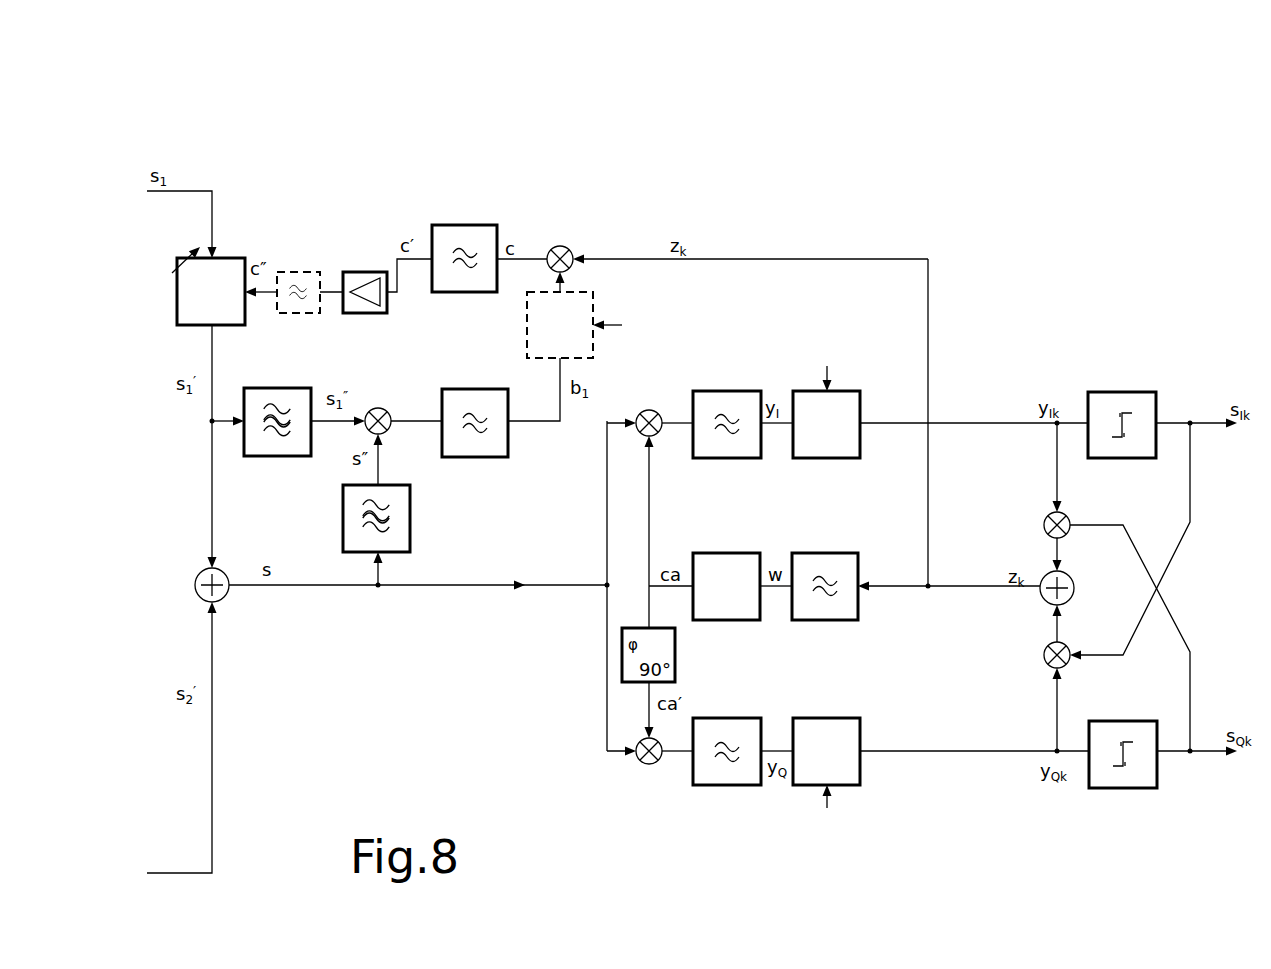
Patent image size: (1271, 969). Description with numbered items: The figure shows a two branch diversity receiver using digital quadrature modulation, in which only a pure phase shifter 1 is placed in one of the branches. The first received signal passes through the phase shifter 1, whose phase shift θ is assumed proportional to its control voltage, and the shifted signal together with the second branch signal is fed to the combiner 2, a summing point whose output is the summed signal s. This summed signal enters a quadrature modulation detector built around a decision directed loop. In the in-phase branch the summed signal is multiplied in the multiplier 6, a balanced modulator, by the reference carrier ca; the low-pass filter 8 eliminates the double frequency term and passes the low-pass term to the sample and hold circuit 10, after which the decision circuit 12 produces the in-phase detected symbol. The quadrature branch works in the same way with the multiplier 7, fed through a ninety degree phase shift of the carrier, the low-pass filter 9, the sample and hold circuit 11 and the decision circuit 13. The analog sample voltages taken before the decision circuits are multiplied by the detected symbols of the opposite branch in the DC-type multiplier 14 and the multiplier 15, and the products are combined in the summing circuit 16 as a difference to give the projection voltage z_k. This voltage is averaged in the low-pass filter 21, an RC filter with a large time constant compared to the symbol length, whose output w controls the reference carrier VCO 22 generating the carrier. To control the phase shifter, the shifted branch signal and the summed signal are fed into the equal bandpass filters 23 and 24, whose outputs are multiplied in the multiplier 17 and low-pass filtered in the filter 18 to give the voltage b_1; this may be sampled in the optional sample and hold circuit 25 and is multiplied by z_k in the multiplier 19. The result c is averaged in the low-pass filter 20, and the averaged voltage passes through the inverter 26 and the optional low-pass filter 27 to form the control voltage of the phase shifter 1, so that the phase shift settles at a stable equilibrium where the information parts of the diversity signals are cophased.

The phase shifter 1 is at (228, 258).
The combiner 2 is at (198, 574).
The multiplier 6 is at (660, 412).
The multiplier 7 is at (652, 764).
The low-pass filter 8 is at (740, 391).
The low-pass filter 9 is at (725, 785).
The sample and hold circuit 10 is at (853, 391).
The sample and hold circuit 11 is at (800, 785).
The decision circuit 12 is at (1145, 392).
The decision circuit 13 is at (1132, 788).
The DC-type multiplier 14 is at (1043, 525).
The multiplier 15 is at (1044, 655).
The summing circuit 16 is at (1047, 602).
The multiplier 17 is at (378, 408).
The low-pass filter 18 is at (462, 389).
The multiplier 19 is at (563, 246).
The low-pass filter 20 is at (480, 225).
The low-pass filter 21 is at (827, 553).
The reference carrier VCO 22 is at (725, 553).
The bandpass filter 23 is at (275, 388).
The bandpass filter 24 is at (343, 513).
The sample and hold circuit 25 is at (593, 338).
The inverter 26 is at (357, 272).
The low-pass filter 27 is at (305, 272).